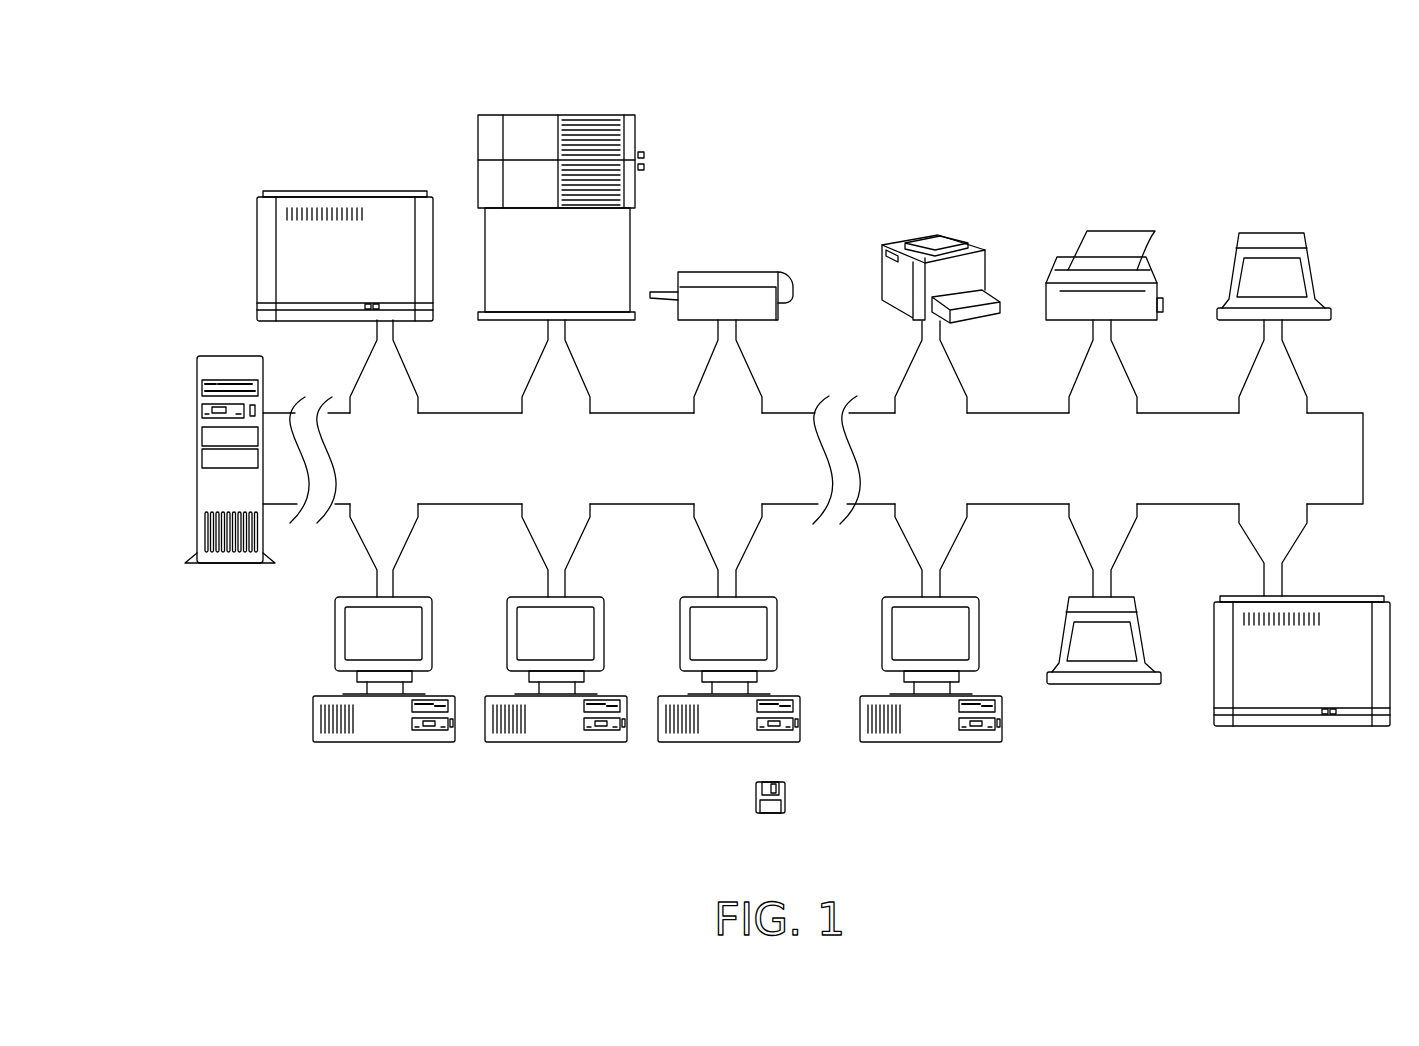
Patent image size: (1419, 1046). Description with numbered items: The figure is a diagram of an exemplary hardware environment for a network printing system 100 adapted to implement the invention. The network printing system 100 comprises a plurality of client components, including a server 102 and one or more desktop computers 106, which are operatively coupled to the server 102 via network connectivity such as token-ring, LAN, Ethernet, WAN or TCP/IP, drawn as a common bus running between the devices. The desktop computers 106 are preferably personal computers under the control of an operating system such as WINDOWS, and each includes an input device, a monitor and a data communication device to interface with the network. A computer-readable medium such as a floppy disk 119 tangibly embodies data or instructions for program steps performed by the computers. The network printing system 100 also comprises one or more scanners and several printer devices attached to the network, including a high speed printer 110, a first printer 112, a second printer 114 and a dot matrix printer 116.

The network printing system 100 is at (986, 126).
The server 102 is at (212, 563).
The desktop computer 106 is at (344, 742).
The high speed printer 110 is at (533, 115).
The first printer 112 is at (702, 272).
The second printer 114 is at (926, 237).
The dot matrix printer 116 is at (1062, 268).
The floppy disk 119 is at (765, 813).